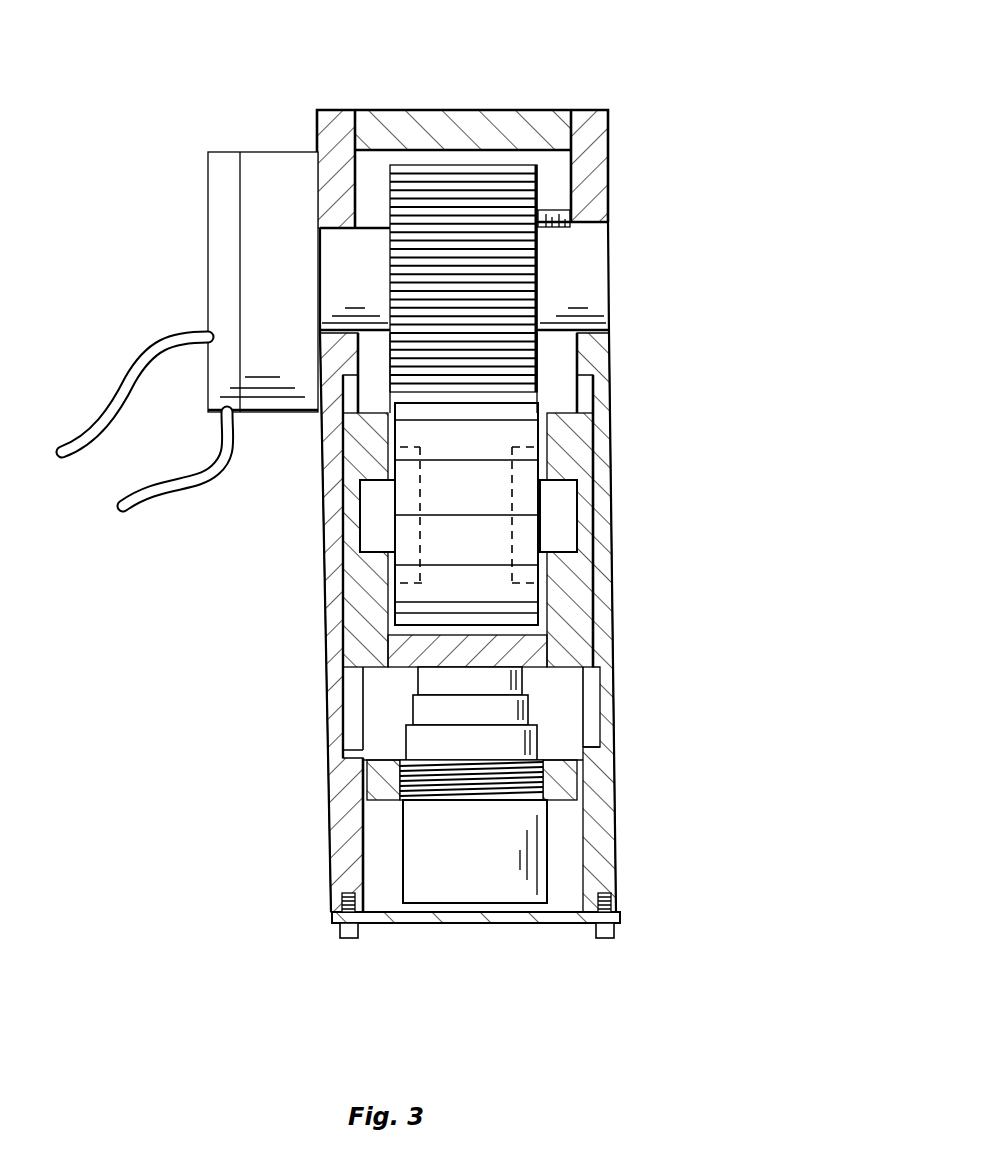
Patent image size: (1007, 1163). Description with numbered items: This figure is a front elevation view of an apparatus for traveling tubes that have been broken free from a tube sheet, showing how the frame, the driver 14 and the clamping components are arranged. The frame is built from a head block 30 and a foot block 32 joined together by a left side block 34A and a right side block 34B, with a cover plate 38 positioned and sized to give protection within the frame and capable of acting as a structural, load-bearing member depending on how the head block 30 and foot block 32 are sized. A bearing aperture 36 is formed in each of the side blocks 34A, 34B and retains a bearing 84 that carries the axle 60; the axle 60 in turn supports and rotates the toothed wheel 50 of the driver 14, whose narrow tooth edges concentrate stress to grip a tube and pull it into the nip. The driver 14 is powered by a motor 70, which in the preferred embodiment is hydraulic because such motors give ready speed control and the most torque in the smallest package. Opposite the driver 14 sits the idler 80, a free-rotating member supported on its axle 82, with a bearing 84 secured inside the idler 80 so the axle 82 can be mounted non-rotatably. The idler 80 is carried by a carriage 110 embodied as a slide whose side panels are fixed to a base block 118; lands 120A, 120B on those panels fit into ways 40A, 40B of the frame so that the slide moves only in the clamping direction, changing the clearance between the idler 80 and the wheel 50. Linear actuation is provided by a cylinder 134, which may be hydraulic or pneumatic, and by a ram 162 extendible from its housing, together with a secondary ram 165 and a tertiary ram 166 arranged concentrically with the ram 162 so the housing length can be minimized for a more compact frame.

The driver 14 is at (645, 225).
The head block 30 is at (410, 110).
The left side block 34A is at (610, 128).
The right side block 34B is at (317, 128).
The motor 70 is at (208, 202).
The wheel 50 is at (515, 183).
The axle 60 is at (580, 277).
The bearing aperture 36 is at (605, 356).
The carriage 110 is at (603, 608).
The idler 80 is at (475, 435).
The axle 82 is at (562, 518).
The bearing 84 is at (560, 575).
The land 120A is at (590, 663).
The land 120B is at (365, 613).
The base block 118 is at (420, 650).
The way 40A is at (590, 690).
The way 40B is at (353, 690).
The ram 162 is at (427, 678).
The secondary ram 165 is at (530, 703).
The tertiary ram 166 is at (540, 744).
The cylinder 134 is at (468, 867).
The cover plate 38 is at (427, 925).
The foot block 32 is at (333, 817).